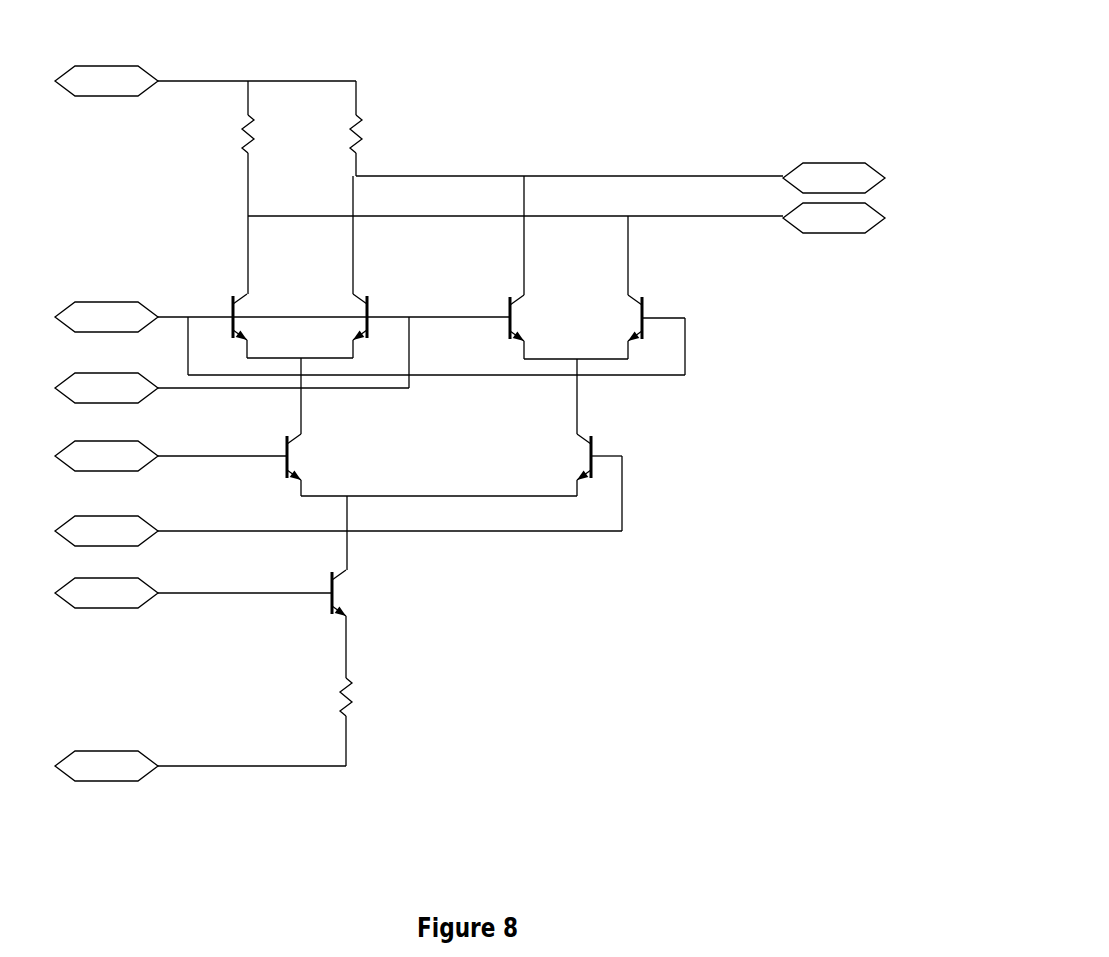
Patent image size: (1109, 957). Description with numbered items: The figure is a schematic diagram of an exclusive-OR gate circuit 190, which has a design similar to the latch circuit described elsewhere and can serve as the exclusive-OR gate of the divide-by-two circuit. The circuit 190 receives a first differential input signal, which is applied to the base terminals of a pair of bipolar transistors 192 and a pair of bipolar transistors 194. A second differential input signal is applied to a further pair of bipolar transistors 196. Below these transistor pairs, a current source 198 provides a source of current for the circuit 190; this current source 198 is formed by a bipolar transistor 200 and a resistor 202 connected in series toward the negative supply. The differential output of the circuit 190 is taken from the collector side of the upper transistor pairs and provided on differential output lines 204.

The exclusive-OR gate circuit 190 is at (506, 429).
The pair of bipolar transistors 192 is at (278, 282).
The pair of bipolar transistors 194 is at (588, 292).
The pair of bipolar transistors 196 is at (538, 435).
The current source 198 is at (379, 671).
The bipolar transistor 200 is at (327, 608).
The resistor 202 is at (365, 780).
The differential output lines 204 is at (873, 202).